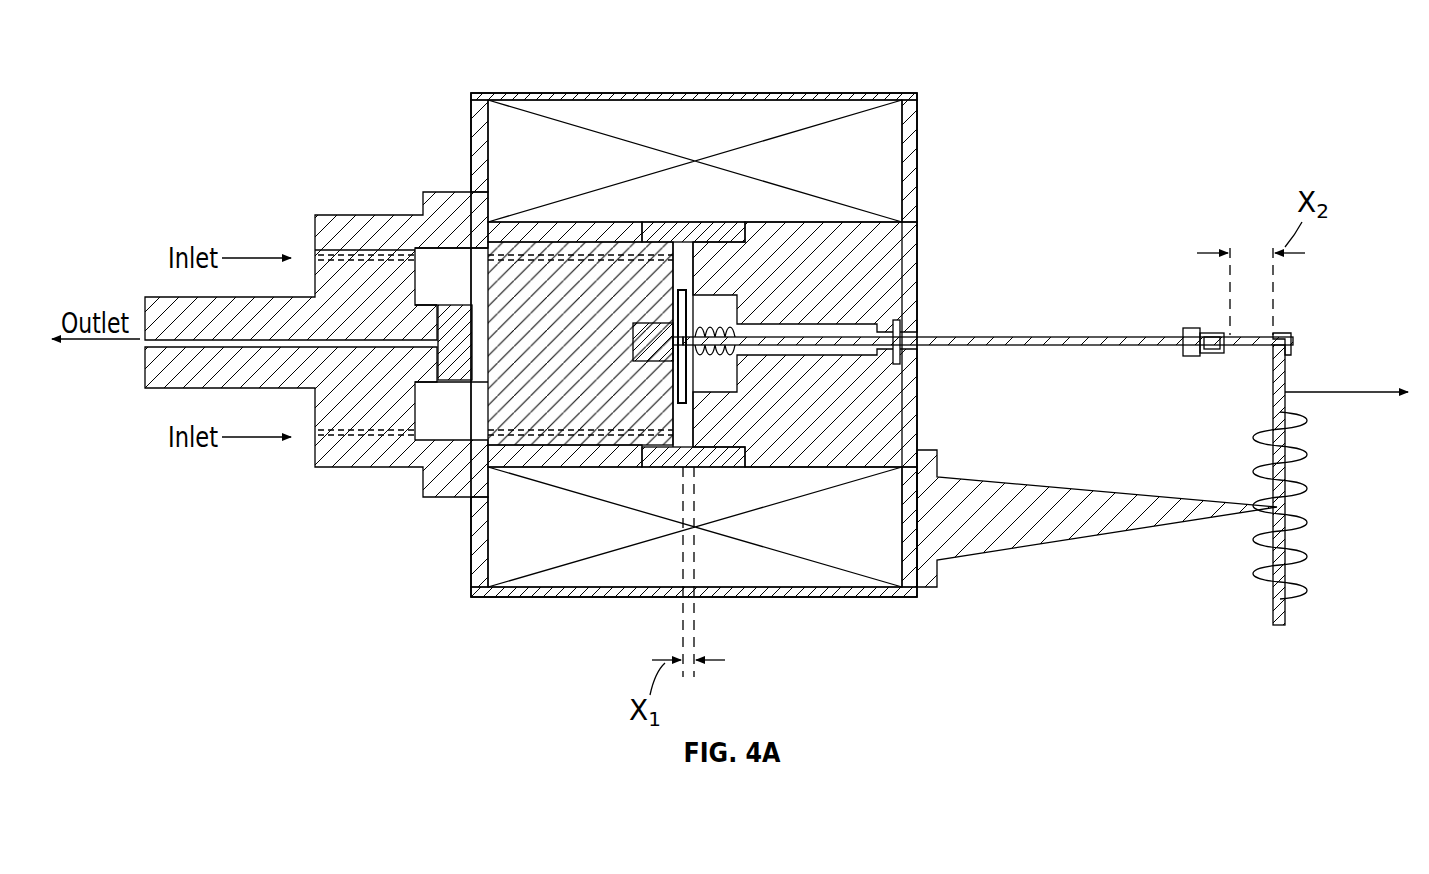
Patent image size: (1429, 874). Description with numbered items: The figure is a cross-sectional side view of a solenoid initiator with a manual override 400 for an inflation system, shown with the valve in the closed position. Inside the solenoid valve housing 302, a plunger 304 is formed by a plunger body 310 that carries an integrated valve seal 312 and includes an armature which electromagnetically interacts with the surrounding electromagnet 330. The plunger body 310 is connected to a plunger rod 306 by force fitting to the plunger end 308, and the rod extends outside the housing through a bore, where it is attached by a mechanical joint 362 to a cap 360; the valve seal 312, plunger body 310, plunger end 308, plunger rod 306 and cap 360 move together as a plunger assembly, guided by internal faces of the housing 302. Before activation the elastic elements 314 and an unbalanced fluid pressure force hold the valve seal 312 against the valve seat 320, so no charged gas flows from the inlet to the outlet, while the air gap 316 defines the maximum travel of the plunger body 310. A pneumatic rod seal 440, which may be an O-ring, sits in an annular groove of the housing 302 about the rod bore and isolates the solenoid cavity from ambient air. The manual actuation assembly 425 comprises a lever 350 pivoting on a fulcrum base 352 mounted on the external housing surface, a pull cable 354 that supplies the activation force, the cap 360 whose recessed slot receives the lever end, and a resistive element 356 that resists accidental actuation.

The solenoid initiator with a manual override 400 is at (240, 113).
The solenoid valve housing 302 is at (918, 168).
The plunger 304 is at (575, 417).
The plunger rod 306 is at (1138, 335).
The plunger end 308 is at (645, 323).
The plunger body 310 is at (438, 452).
The valve seal 312 is at (455, 305).
The elastic elements 314 is at (708, 322).
The air gap 316 is at (684, 250).
The valve seat 320 is at (435, 343).
The electromagnet 330 is at (550, 95).
The lever 350 is at (1272, 606).
The fulcrum base 352 is at (1022, 555).
The pull cable 354 is at (1345, 396).
The resistive element 356 is at (1307, 567).
The cap 360 is at (1294, 338).
The mechanical joint 362 is at (1193, 358).
The manual actuation assembly 425 is at (1114, 239).
The pneumatic rod seal 440 is at (918, 325).